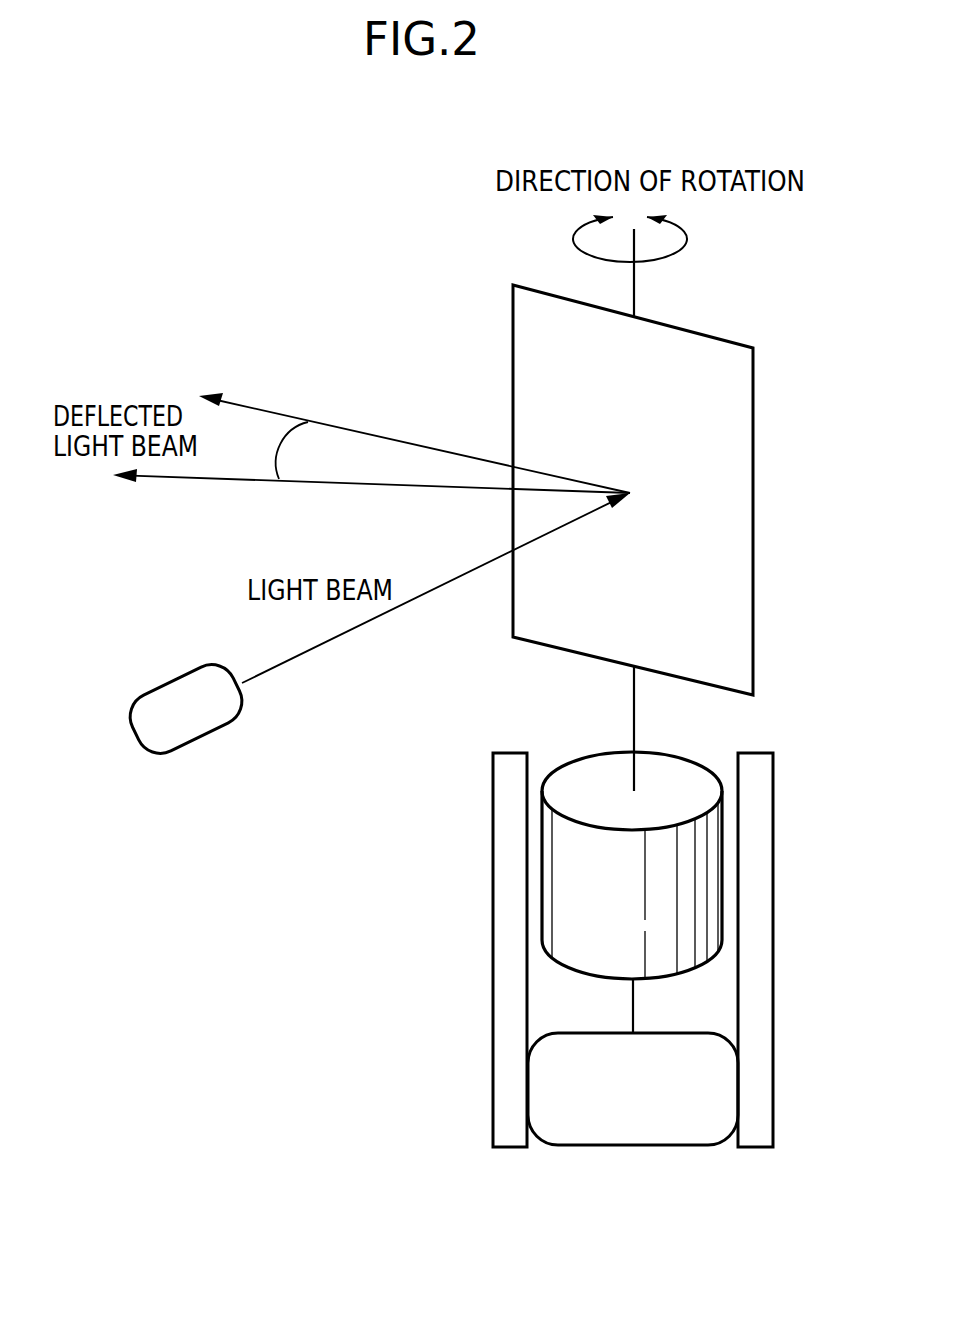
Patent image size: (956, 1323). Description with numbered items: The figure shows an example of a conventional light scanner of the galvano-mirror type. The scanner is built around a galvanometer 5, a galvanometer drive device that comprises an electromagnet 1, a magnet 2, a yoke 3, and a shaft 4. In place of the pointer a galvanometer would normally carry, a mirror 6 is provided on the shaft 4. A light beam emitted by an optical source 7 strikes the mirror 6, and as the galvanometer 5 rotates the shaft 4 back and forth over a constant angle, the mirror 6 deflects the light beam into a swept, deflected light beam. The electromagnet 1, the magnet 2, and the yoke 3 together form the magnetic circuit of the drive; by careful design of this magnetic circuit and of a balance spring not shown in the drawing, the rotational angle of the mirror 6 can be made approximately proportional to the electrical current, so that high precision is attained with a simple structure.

The electromagnet 1 is at (606, 750).
The magnet 2 is at (648, 1147).
The yoke 3 is at (492, 982).
The shaft 4 is at (636, 716).
The galvanometer 5 is at (441, 855).
The mirror 6 is at (753, 560).
The optical source 7 is at (207, 741).